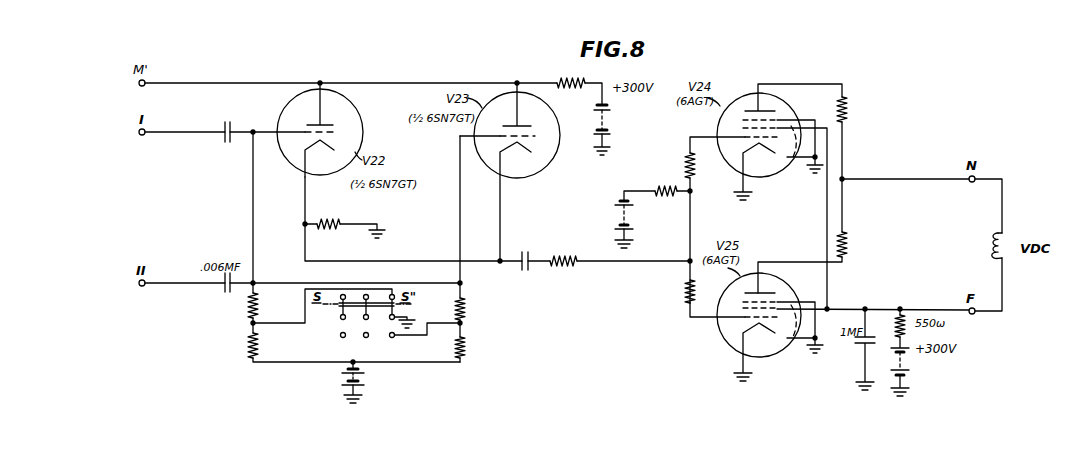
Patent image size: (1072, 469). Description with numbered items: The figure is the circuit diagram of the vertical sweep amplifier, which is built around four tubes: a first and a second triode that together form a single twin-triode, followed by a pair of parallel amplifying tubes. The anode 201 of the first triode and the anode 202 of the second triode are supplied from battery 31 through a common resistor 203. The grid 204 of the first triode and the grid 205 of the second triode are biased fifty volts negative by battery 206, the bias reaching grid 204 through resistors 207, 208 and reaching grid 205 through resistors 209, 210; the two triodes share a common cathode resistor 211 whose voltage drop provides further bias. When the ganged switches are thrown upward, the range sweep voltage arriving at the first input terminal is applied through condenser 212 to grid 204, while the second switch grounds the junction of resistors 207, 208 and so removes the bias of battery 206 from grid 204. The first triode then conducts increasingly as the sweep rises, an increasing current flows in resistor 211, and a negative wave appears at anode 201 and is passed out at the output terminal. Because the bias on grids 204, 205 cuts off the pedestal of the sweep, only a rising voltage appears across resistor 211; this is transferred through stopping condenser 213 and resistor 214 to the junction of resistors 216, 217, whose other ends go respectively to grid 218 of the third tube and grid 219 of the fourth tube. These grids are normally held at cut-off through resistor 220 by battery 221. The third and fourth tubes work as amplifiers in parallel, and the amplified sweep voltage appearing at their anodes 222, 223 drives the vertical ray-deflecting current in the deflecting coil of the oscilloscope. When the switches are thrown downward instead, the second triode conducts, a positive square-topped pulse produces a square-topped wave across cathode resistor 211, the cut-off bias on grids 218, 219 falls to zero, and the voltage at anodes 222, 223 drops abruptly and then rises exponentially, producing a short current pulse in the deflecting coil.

The battery 31 is at (608, 112).
The anode 201 is at (307, 124).
The anode 202 is at (524, 126).
The resistor 203 is at (557, 82).
The grid 204 is at (304, 134).
The grid 205 is at (500, 138).
The battery 206 is at (344, 380).
The resistor 207 is at (259, 300).
The resistor 208 is at (260, 344).
The resistor 209 is at (467, 343).
The resistor 210 is at (466, 303).
The common cathode resistor 211 is at (325, 230).
The condenser 212 is at (222, 140).
The stopping condenser 213 is at (523, 271).
The resistor 214 is at (553, 256).
The resistor 216 is at (688, 168).
The resistor 217 is at (688, 294).
The grid 218 is at (747, 134).
The grid 219 is at (745, 319).
The resistor 220 is at (651, 187).
The battery 221 is at (618, 225).
The anode 222 is at (757, 110).
The anode 223 is at (770, 292).